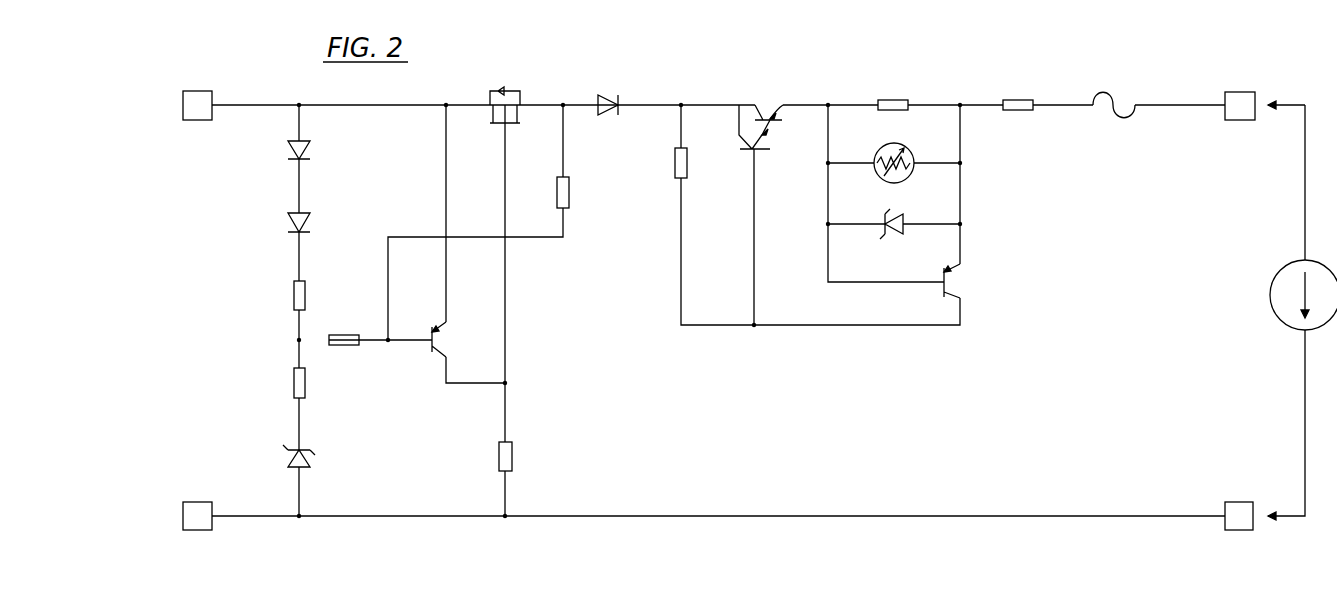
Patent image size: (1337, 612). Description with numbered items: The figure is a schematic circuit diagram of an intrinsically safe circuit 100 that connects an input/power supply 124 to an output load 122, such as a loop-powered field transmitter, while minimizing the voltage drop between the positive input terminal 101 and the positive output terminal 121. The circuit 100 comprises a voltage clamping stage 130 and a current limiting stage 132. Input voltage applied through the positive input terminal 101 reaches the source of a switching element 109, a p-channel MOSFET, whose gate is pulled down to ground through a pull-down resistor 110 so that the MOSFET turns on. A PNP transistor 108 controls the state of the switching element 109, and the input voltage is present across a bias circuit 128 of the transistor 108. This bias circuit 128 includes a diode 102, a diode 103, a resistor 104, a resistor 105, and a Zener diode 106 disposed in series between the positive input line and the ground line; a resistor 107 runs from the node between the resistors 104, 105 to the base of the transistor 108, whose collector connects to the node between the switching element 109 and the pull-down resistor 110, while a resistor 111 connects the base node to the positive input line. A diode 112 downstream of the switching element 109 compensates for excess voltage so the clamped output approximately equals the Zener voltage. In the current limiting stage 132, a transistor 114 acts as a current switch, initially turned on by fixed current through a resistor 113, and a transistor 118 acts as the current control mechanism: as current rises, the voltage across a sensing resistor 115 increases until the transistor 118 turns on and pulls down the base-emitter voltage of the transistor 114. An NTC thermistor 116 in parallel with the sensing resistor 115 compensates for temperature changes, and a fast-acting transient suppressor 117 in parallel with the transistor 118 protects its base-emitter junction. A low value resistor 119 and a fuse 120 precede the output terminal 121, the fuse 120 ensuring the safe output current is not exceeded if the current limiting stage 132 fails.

The intrinsically safe circuit 100 is at (722, 52).
The positive input terminal 101 is at (209, 86).
The diode 102 is at (293, 159).
The diode 103 is at (292, 232).
The resistor 104 is at (291, 298).
The resistor 105 is at (291, 392).
The Zener diode 106 is at (288, 468).
The resistor 107 is at (352, 350).
The PNP transistor 108 is at (424, 362).
The switching element 109 is at (518, 86).
The pull-down resistor 110 is at (496, 460).
The resistor 111 is at (577, 207).
The diode 112 is at (616, 86).
The resistor 113 is at (667, 172).
The transistor 114 is at (766, 98).
The sensing resistor 115 is at (903, 94).
The NTC thermistor 116 is at (874, 174).
The transient suppressor 117 is at (881, 230).
The transistor 118 is at (970, 287).
The low value resistor 119 is at (1028, 92).
The fuse 120 is at (1122, 90).
The positive output terminal 121 is at (1246, 85).
The output load 122 is at (1270, 267).
The input/power supply 124 is at (176, 320).
The bias circuit 128 is at (330, 292).
The voltage clamping stage 130 is at (358, 504).
The current limiting stage 132 is at (927, 386).